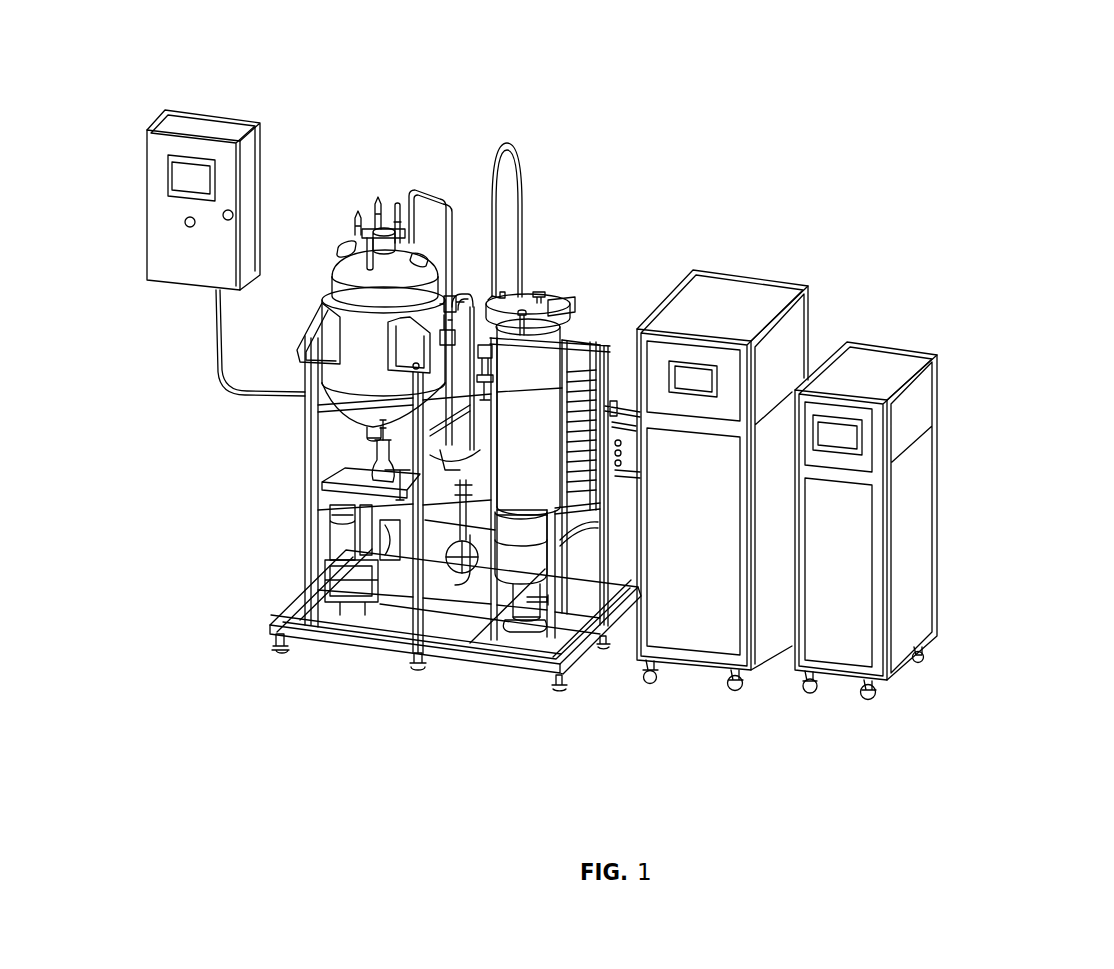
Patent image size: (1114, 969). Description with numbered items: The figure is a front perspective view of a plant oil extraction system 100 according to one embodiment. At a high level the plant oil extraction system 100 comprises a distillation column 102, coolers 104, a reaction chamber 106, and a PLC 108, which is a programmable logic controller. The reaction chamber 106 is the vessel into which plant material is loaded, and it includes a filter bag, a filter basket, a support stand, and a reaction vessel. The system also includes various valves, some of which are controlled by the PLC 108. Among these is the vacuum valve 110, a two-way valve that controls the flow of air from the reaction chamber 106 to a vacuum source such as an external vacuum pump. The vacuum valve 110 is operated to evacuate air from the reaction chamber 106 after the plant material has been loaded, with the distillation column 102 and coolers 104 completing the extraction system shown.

The plant oil extraction system 100 is at (1012, 84).
The distillation column 102 is at (326, 286).
The coolers 104 is at (882, 345).
The reaction chamber 106 is at (538, 290).
The PLC 108 is at (264, 152).
The vacuum valve 110 is at (487, 377).